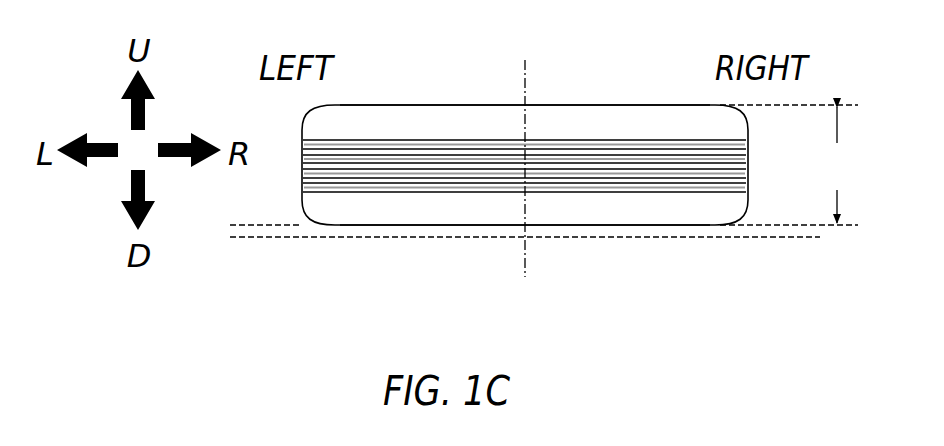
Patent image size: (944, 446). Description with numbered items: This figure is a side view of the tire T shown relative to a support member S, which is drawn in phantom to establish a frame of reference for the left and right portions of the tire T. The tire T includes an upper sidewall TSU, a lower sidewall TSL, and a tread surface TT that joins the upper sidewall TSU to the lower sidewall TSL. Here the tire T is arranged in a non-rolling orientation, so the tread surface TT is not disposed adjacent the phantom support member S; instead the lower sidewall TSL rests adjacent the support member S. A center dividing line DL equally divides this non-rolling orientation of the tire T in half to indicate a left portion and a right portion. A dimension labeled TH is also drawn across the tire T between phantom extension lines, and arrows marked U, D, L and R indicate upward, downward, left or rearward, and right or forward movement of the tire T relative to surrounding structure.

The tire T is at (380, 85).
The upper sidewall TSU is at (497, 103).
The lower sidewall TSL is at (462, 227).
The tread surface TT is at (747, 147).
The tread height TH is at (843, 165).
The center dividing line DL is at (527, 83).
The support member S is at (261, 232).